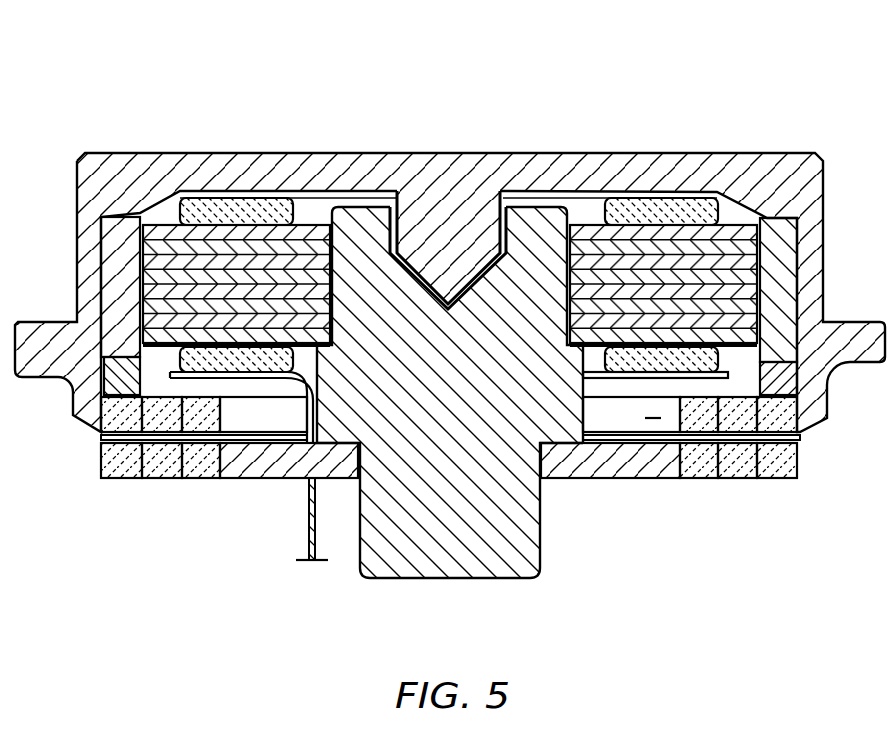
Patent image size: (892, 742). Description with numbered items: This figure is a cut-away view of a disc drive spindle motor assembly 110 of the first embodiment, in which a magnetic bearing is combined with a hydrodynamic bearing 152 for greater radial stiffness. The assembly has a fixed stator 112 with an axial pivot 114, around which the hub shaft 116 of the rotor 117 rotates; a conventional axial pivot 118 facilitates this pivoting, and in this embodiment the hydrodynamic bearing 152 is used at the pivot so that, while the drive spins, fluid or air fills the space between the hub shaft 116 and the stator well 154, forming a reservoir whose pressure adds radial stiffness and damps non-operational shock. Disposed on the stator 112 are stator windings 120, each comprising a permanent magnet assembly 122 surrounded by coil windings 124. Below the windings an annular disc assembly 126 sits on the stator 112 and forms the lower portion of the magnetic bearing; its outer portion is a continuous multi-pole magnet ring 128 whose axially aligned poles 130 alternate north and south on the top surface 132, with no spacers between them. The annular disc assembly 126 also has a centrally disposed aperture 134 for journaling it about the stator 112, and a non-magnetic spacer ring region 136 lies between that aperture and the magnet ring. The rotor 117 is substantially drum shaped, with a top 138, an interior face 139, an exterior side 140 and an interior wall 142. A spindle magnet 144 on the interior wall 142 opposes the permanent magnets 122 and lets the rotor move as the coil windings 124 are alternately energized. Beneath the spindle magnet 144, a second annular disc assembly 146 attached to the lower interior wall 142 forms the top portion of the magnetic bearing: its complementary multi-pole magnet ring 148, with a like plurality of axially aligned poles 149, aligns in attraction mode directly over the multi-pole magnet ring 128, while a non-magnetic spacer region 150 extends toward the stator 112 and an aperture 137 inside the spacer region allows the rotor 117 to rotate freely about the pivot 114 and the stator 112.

The spindle motor assembly 110 is at (470, 636).
The stator 112 is at (489, 355).
The axial pivot 114 is at (461, 199).
The hub shaft 116 is at (406, 169).
The rotor 117 is at (445, 265).
The conventional axial pivot 118 is at (497, 258).
The stator windings 120 is at (740, 220).
The permanent magnet assembly 122 is at (122, 297).
The coil windings 124 is at (257, 197).
The annular disc assembly 126 is at (250, 463).
The multi-pole magnet ring 128 is at (119, 484).
The axially aligned poles 130 is at (132, 470).
The top surface 132 is at (101, 437).
The centrally disposed aperture 134 is at (353, 480).
The non-magnetic spacer ring region 136 is at (300, 472).
The aperture 137 is at (587, 425).
The top 138 is at (445, 232).
The interior face 139 is at (655, 187).
The exterior side 140 is at (448, 232).
The interior wall 142 is at (60, 322).
The spindle magnet 144 is at (173, 277).
The second annular disc assembly 146 is at (653, 420).
The complementary multi-pole magnet ring 148 is at (776, 463).
The axially aligned poles 149 is at (748, 420).
The spacer region 150 is at (617, 420).
The hydrodynamic bearing 152 is at (406, 187).
The stator well 154 is at (437, 240).